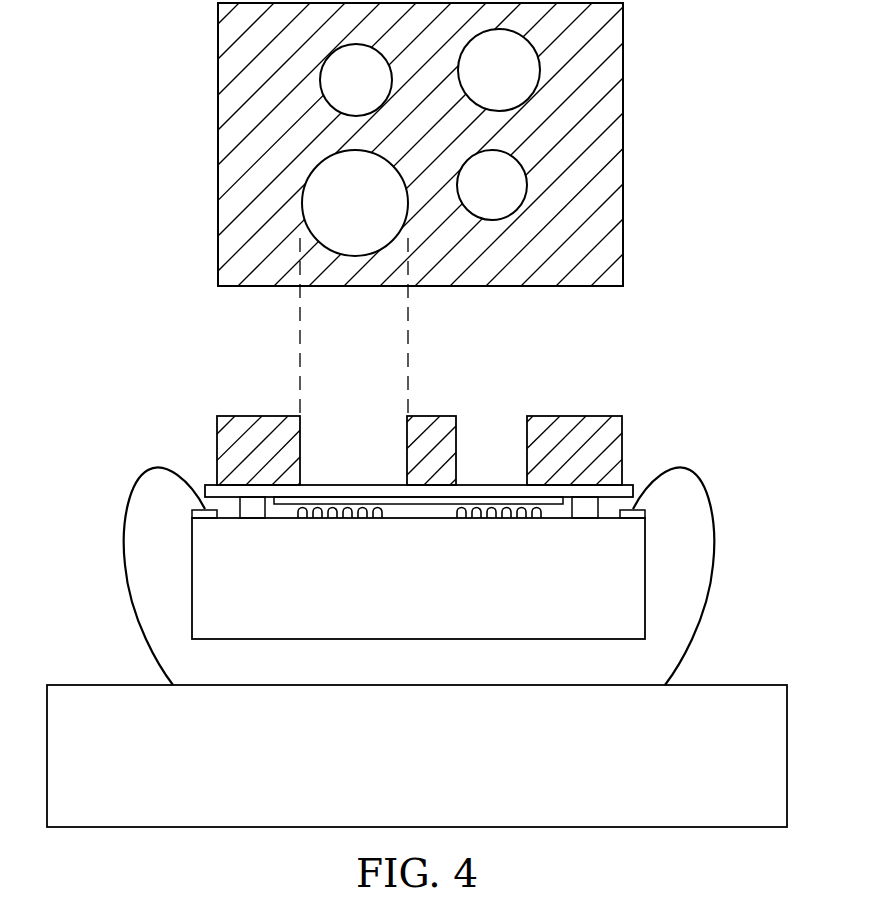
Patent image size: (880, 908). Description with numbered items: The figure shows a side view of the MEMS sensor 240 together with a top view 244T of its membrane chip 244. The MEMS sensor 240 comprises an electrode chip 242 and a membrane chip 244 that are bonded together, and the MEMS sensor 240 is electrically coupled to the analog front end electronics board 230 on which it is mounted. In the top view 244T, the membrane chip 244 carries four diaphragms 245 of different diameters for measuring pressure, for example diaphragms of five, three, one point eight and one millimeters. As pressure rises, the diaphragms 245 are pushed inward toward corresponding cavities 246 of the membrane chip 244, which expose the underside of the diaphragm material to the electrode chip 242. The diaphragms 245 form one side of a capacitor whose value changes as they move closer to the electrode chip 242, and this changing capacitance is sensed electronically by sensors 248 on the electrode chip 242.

The top view of the membrane chip 244T is at (633, 105).
The diaphragms 245 is at (334, 96).
The cavities 246 is at (348, 410).
The membrane chip 244 is at (631, 445).
The MEMS sensor 240 is at (100, 413).
The electrode chip 242 is at (396, 607).
The sensors 248 is at (382, 525).
The analog front end electronics board 230 is at (396, 769).